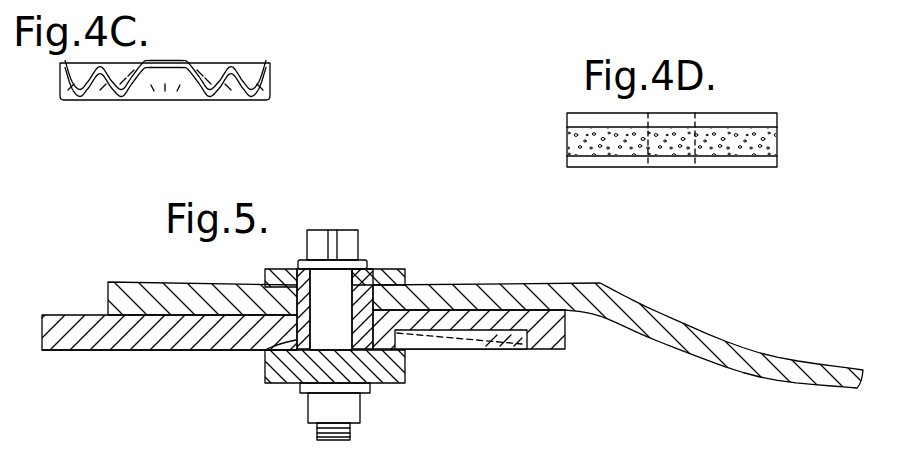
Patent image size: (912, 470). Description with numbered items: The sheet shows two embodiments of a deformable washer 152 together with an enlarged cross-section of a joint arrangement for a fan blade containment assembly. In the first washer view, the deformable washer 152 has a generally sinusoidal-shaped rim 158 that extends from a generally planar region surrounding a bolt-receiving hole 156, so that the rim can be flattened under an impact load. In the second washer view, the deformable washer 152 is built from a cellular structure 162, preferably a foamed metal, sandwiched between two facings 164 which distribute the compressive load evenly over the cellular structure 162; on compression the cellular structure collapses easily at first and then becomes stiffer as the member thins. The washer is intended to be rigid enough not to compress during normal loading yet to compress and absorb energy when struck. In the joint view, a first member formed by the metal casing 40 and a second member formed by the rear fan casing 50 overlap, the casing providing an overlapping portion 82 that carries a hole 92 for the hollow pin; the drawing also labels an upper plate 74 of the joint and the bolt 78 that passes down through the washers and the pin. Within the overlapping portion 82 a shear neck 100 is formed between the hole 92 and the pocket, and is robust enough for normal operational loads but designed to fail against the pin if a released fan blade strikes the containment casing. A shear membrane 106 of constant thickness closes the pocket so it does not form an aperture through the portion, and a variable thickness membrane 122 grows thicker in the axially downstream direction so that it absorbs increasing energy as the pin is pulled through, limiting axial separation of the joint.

In FIG. 5, the casing 40 is at (58, 355).
In FIG. 5, the rear fan casing 50 is at (730, 349).
In FIG. 5, the upper plate 74 is at (110, 282).
In FIG. 5, the bolt 78 is at (366, 228).
In FIG. 5, the overlapping portion 82 is at (178, 354).
In FIG. 5, the hole 92 is at (275, 344).
In FIG. 5, the shear neck 100 is at (398, 339).
In FIG. 5, the shear membrane 106 is at (477, 326).
In FIG. 5, the variable thickness membrane 122 is at (518, 349).
In FIG. 4C, the deformable washer 152 is at (271, 78).
In FIG. 4D, the deformable washer 152 is at (779, 131).
In FIG. 5, the deformable washer 152 is at (266, 384).
In FIG. 4C, the bolt-receiving hole 156 is at (157, 63).
In FIG. 4D, the bolt-receiving hole 156 is at (686, 113).
In FIG. 4C, the sinusoidal-shaped rim 158 is at (218, 99).
In FIG. 4D, the cellular structure 162 is at (770, 151).
In FIG. 4D, the facings 164 is at (777, 115).